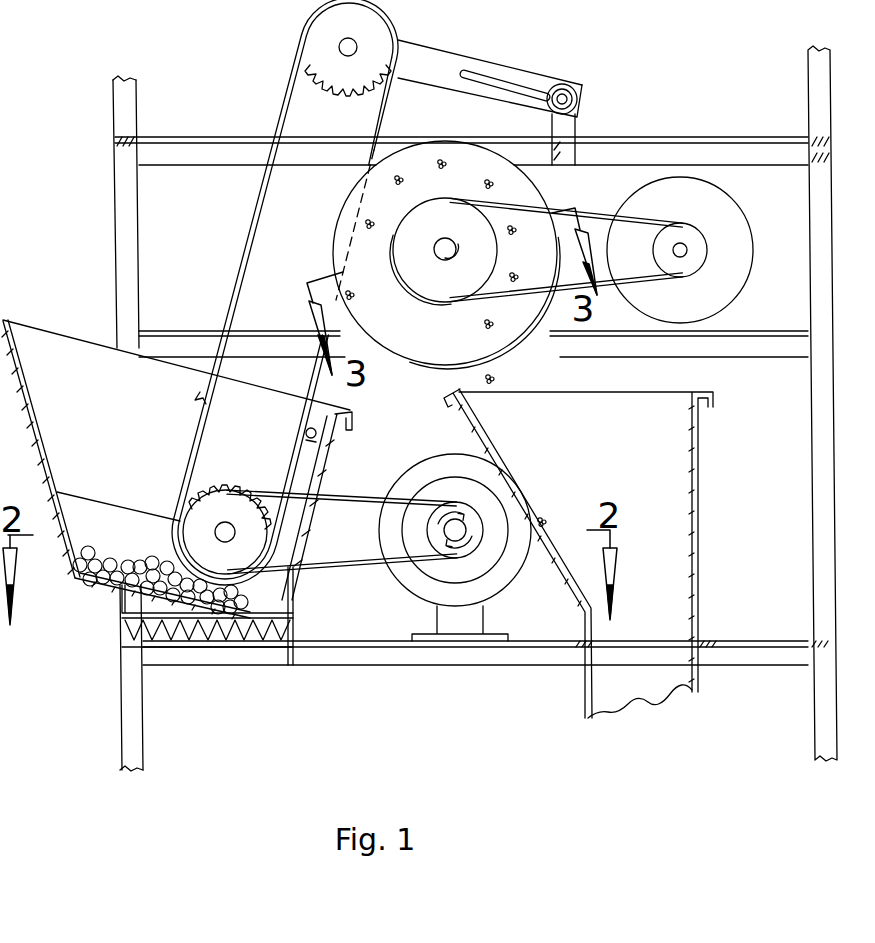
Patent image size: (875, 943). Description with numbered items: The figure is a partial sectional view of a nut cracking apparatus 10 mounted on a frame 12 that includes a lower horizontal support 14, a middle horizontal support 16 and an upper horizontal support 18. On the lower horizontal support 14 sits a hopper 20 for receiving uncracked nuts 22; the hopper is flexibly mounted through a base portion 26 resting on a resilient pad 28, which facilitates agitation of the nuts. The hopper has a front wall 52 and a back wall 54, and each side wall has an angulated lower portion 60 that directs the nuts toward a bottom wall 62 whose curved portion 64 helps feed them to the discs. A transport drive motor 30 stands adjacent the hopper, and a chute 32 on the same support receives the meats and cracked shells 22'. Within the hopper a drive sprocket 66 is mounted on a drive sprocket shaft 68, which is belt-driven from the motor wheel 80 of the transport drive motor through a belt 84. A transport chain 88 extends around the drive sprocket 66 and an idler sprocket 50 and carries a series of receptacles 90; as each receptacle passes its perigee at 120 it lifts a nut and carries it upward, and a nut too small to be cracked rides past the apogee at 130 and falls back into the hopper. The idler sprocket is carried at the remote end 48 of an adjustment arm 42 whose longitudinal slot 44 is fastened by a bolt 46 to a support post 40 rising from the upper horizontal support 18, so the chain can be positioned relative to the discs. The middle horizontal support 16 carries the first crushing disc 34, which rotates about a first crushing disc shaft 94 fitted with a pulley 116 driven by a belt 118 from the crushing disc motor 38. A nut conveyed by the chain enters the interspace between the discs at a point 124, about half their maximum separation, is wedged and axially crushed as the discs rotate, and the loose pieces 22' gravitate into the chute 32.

The nut cracking apparatus 10 is at (838, 190).
The frame 12 is at (817, 243).
The lower horizontal support 14 is at (343, 657).
The middle horizontal support 16 is at (556, 348).
The upper horizontal support 18 is at (628, 154).
The hopper 20 is at (78, 393).
The uncracked nuts 22 is at (248, 365).
The cracked nuts 22' is at (463, 343).
The base portion 26 is at (300, 607).
The resilient pad 28 is at (292, 622).
The transport drive motor 30 is at (520, 573).
The chute 32 is at (700, 463).
The first crushing disc 34 is at (420, 350).
The crushing disc motor 38 is at (717, 212).
The support post 40 is at (560, 128).
The adjustment arm 42 is at (452, 62).
The longitudinal slot 44 is at (487, 80).
The bolt 46 is at (563, 90).
The remote end 48 is at (414, 53).
The idler sprocket 50 is at (312, 20).
The front wall 52 is at (331, 477).
The back wall 54 is at (45, 454).
The lower portion 60 is at (80, 535).
The bottom wall 62 is at (105, 592).
The curved portion 64 is at (282, 603).
The drive sprocket 66 is at (240, 487).
The drive sprocket shaft 68 is at (230, 518).
The motor wheel 80 is at (487, 510).
The belt 84 is at (352, 562).
The transport chain 88 is at (232, 264).
The receptacles 90 is at (200, 397).
The first crushing disc shaft 94 is at (437, 247).
The pulley 116 is at (428, 218).
The belt 118 is at (582, 200).
The perigee 120 is at (210, 542).
The point of entry 124 is at (343, 297).
The apogee 130 is at (343, 2).